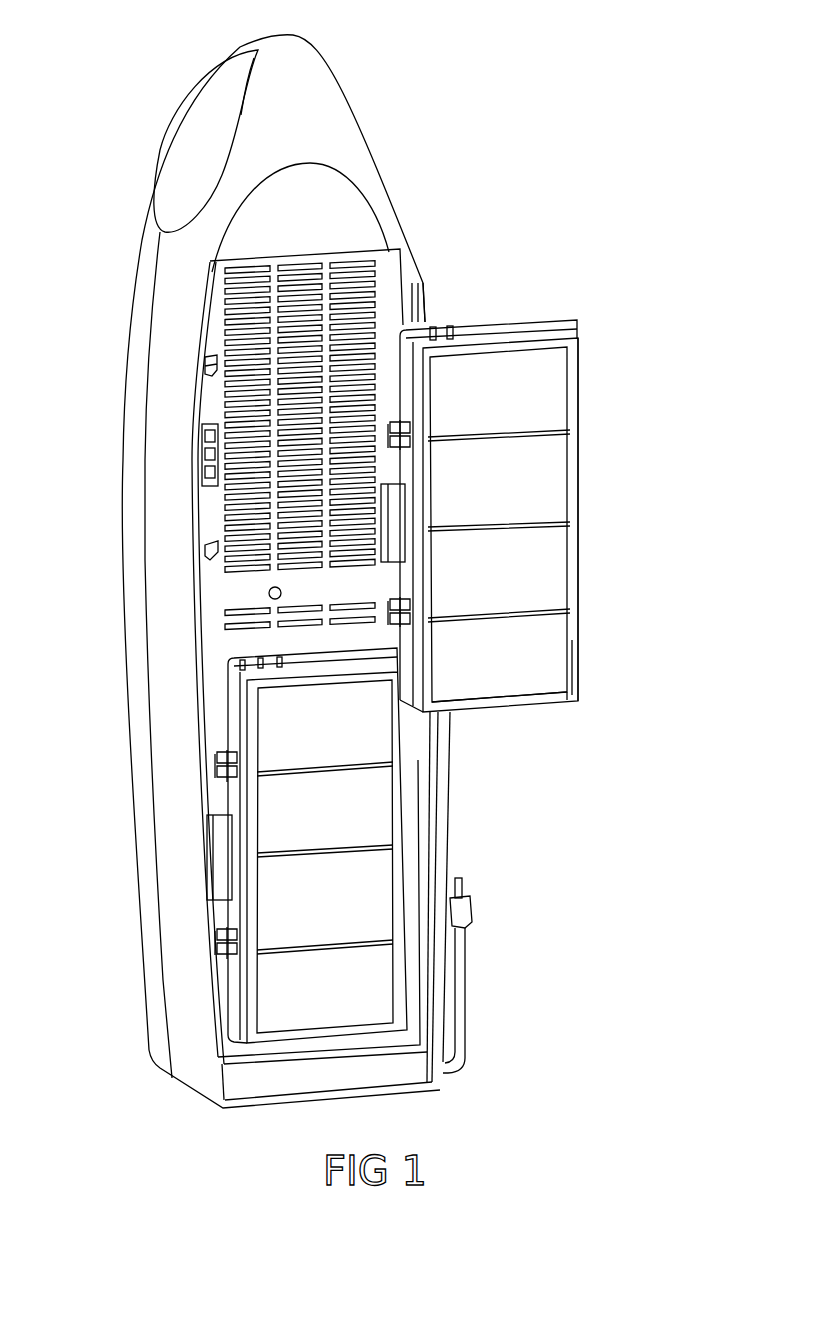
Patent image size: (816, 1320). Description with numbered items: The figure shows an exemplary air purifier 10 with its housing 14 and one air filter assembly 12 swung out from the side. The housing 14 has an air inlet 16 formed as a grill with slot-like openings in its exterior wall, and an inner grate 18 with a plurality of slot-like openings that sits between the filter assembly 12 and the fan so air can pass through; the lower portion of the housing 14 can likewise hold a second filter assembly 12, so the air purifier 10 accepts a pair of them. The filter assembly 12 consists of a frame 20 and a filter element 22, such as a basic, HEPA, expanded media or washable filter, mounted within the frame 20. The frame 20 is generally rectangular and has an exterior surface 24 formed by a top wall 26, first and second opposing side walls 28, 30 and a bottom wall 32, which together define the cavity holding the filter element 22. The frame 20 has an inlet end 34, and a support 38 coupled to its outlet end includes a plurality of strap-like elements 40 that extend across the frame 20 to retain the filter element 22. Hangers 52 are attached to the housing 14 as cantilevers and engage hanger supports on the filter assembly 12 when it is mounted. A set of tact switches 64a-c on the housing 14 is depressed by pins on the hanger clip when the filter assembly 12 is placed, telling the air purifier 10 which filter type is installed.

The air purifier 10 is at (112, 118).
The air filter assembly 12 is at (612, 397).
The housing 14 is at (352, 93).
The air inlet 16 is at (233, 529).
The inner grate 18 is at (247, 553).
The frame 20 is at (578, 355).
The filter element 22 is at (552, 480).
The exterior surface 24 is at (580, 655).
The top wall 26 is at (497, 351).
The first side wall 28 is at (580, 565).
The second side wall 30 is at (405, 322).
The bottom wall 32 is at (490, 713).
The inlet end 34 is at (563, 700).
The support 38 is at (578, 608).
The strap-like elements 40 is at (547, 523).
The hangers 52 is at (205, 358).
The tact switches 64a-c is at (203, 453).